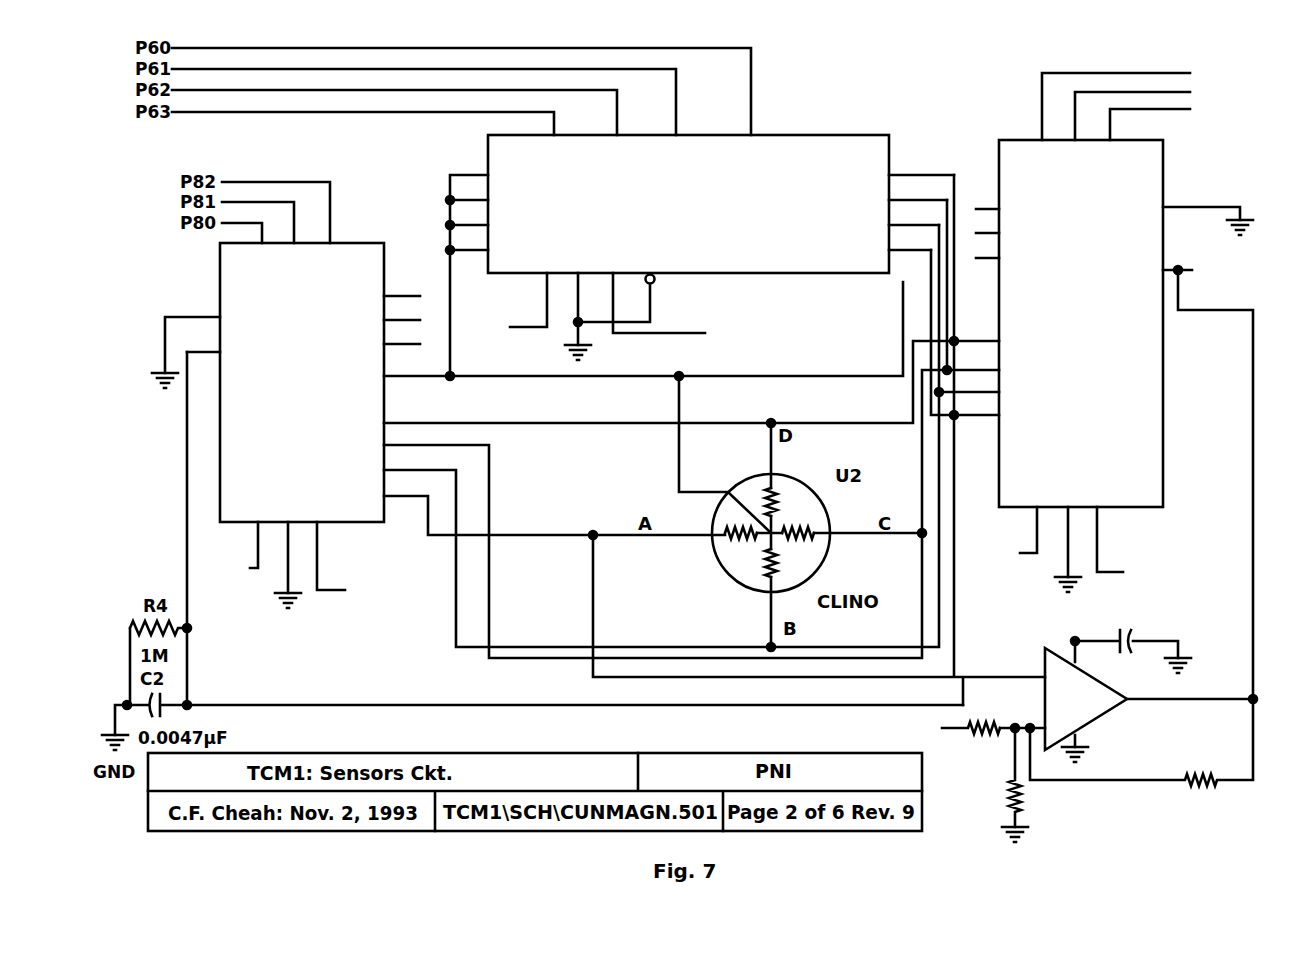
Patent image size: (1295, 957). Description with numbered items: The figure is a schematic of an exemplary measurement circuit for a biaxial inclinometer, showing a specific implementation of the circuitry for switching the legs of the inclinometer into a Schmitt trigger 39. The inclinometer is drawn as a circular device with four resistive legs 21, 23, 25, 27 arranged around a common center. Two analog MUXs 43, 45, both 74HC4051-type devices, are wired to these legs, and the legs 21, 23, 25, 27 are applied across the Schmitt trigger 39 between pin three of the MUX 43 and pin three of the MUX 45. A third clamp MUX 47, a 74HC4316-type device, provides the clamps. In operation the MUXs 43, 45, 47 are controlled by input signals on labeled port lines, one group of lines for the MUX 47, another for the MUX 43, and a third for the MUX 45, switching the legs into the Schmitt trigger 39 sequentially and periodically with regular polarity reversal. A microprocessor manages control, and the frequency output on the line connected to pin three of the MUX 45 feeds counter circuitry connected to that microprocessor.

The leg 21 is at (783, 500).
The leg 23 is at (803, 543).
The leg 25 is at (760, 563).
The leg 27 is at (737, 543).
The Schmitt trigger 39 is at (1107, 790).
The analog MUX 43 is at (362, 243).
The analog MUX 45 is at (1163, 407).
The clamp MUX 47 is at (805, 135).